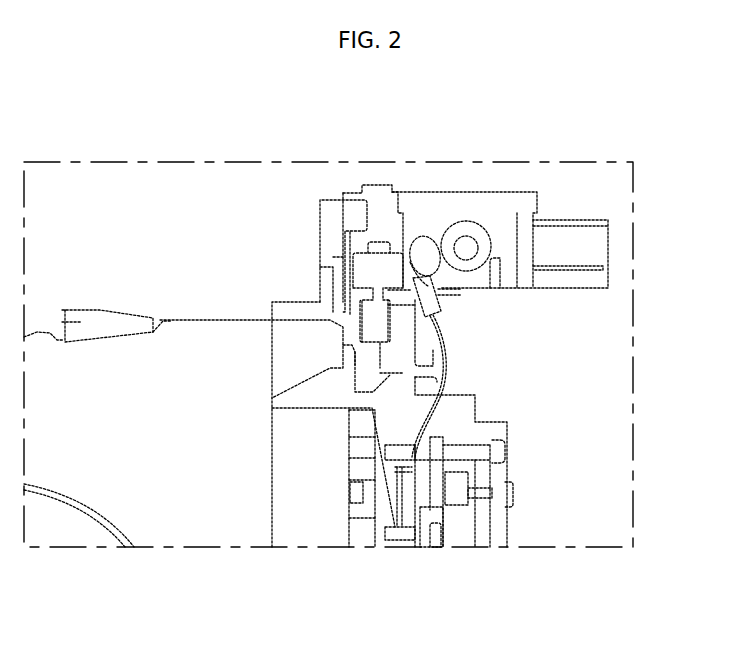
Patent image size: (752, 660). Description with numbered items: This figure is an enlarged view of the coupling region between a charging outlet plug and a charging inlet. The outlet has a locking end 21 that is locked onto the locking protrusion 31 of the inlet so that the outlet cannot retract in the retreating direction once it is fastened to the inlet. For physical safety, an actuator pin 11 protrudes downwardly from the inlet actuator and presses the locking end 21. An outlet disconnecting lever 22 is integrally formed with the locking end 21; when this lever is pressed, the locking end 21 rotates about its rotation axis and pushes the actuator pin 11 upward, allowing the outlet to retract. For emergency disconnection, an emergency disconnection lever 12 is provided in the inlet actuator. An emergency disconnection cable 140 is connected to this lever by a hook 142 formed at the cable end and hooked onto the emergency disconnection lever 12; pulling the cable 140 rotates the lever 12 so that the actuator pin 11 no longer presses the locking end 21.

The actuator pin 11 is at (372, 335).
The emergency disconnection lever 12 is at (445, 242).
The locking end 21 is at (390, 353).
The outlet disconnecting lever 22 is at (97, 322).
The locking protrusion 31 is at (353, 385).
The emergency disconnection cable 140 is at (428, 422).
The hook 142 is at (478, 291).